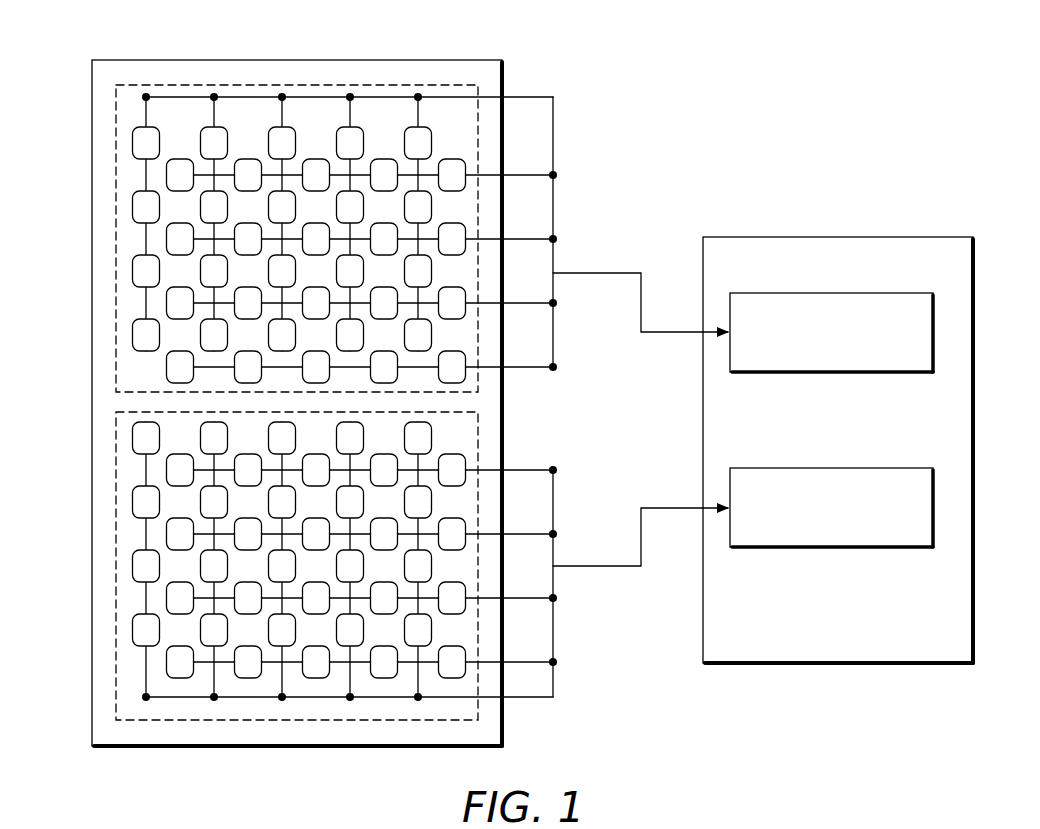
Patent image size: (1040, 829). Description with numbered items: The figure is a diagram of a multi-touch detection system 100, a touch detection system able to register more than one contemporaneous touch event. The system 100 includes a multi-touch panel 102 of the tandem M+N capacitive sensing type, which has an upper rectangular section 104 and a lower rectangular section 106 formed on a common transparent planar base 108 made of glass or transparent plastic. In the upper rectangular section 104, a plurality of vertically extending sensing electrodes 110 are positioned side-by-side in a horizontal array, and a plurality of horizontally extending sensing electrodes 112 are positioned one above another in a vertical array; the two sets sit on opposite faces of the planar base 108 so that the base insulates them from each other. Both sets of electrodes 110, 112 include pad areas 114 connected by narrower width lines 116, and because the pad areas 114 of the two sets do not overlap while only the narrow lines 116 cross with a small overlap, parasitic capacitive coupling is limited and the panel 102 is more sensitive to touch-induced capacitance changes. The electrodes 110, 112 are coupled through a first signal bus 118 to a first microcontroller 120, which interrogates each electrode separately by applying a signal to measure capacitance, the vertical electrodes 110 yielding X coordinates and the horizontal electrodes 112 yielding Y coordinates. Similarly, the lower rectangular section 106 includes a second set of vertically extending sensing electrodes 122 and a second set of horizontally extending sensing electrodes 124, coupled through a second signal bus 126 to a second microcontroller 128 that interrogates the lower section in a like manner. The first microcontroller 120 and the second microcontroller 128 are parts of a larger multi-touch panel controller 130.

The multi-touch detection system 100 is at (972, 51).
The multi-touch panel 102 is at (447, 60).
The upper rectangular section 104 is at (116, 143).
The lower rectangular section 106 is at (116, 566).
The planar base 108 is at (487, 735).
The vertically extending sensing electrodes 110 is at (148, 107).
The horizontally extending sensing electrodes 112 is at (167, 175).
The pad areas 114 is at (133, 336).
The narrower width lines 116 is at (420, 107).
The first signal bus 118 is at (553, 137).
The first microcontroller 120 is at (918, 293).
The second set of vertically extending sensing electrodes 122 is at (146, 668).
The second set of horizontally extending sensing electrodes 124 is at (497, 471).
The second signal bus 126 is at (553, 633).
The second microcontroller 128 is at (918, 468).
The multi-touch panel controller 130 is at (958, 237).